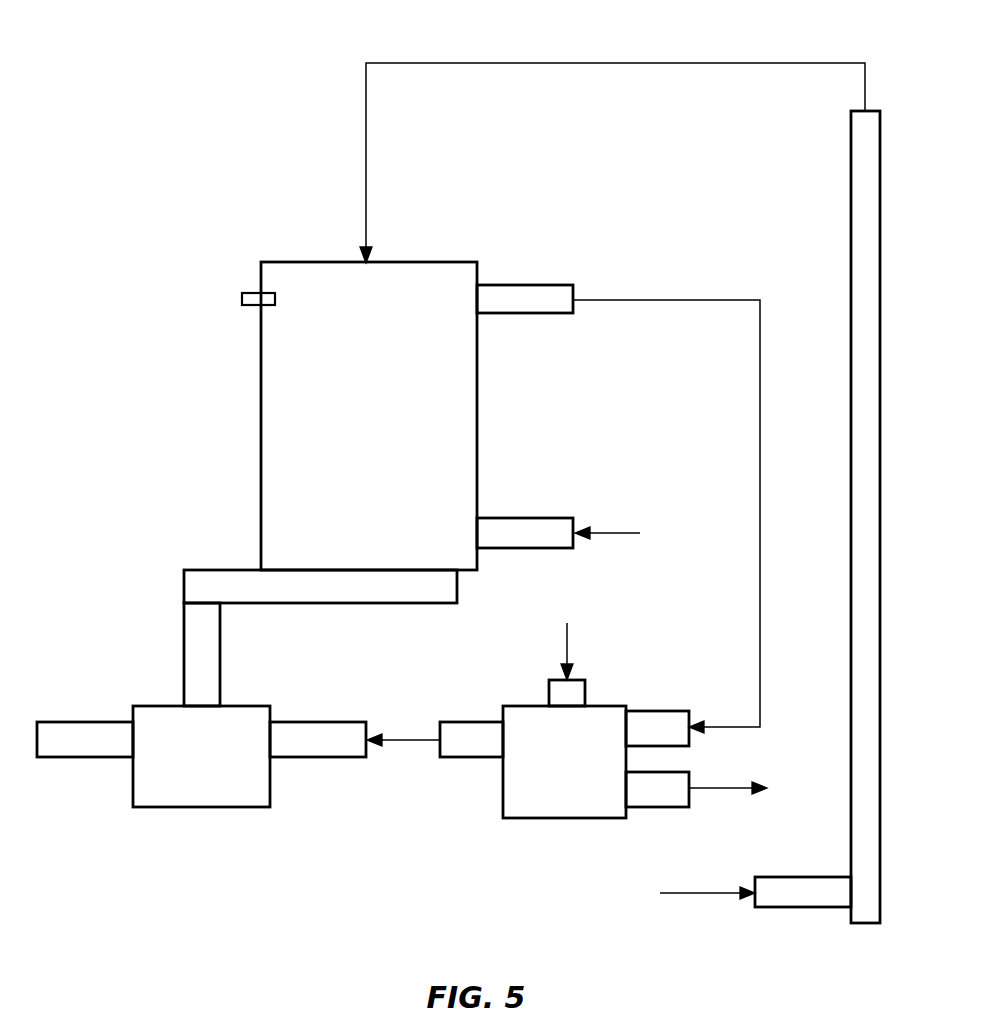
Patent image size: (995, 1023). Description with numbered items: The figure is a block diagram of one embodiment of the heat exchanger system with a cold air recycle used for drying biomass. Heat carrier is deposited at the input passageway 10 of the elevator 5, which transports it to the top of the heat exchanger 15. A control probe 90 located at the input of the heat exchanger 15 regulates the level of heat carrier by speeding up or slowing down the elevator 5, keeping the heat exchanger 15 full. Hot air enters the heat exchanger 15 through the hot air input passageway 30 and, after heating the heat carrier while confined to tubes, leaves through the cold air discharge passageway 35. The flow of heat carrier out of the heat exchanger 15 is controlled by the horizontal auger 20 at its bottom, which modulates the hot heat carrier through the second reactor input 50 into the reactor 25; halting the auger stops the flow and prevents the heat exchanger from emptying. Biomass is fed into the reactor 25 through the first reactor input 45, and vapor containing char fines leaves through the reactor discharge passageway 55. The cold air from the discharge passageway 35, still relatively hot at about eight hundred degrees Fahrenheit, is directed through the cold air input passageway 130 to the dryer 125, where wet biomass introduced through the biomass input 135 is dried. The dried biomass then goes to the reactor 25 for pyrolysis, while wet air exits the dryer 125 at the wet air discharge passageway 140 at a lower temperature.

The elevator 5 is at (851, 293).
The input passageway 10 is at (832, 877).
The heat exchanger 15 is at (317, 262).
The horizontal auger 20 is at (308, 607).
The auger reactor 25 is at (153, 705).
The hot air input passageway 30 is at (507, 515).
The cold air discharge passageway 35 is at (520, 283).
The first reactor input 45 is at (300, 757).
The second reactor input 50 is at (182, 648).
The reactor discharge passageway 55 is at (100, 757).
The control probe 90 is at (240, 295).
The dryer 125 is at (522, 705).
The cold air input passageway 130 is at (647, 710).
The biomass input 135 is at (585, 690).
The wet air discharge passageway 140 is at (673, 808).